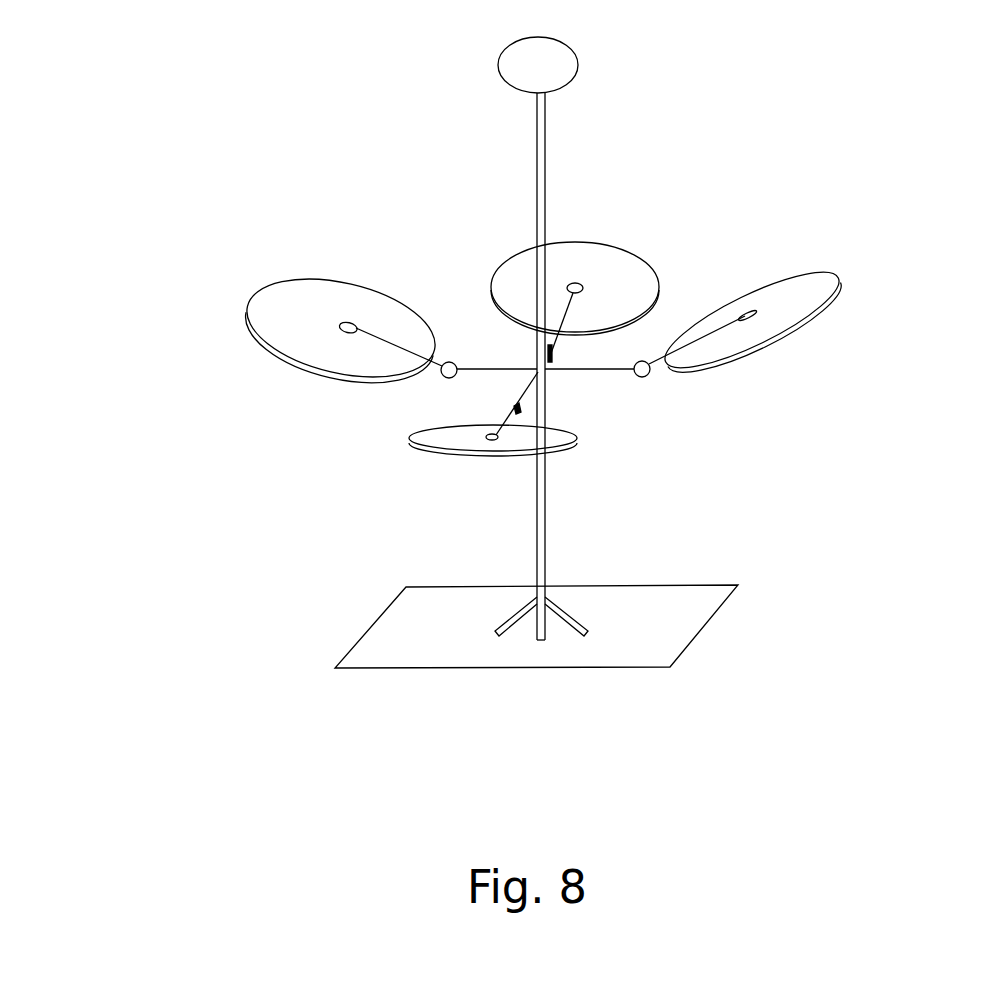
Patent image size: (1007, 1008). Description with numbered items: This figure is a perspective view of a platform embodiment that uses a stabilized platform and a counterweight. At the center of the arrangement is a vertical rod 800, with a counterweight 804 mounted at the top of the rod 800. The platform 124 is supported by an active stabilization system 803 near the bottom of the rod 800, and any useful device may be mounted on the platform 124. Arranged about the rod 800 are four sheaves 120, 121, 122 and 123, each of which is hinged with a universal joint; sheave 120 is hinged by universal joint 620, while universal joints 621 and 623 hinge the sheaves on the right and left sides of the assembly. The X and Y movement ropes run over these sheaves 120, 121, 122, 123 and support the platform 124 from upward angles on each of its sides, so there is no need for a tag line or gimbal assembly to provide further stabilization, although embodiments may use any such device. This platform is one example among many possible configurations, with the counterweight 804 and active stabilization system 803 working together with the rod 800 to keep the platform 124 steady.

The sheave 120 is at (575, 227).
The sheave 121 is at (845, 268).
The sheave 122 is at (407, 440).
The sheave 123 is at (242, 285).
The platform 124 is at (717, 623).
The universal joint 620 is at (535, 347).
The universal joint 621 is at (650, 377).
The universal joint 623 is at (440, 382).
The rod 800 is at (548, 485).
The active stabilization system 803 is at (502, 638).
The counterweight 804 is at (588, 60).